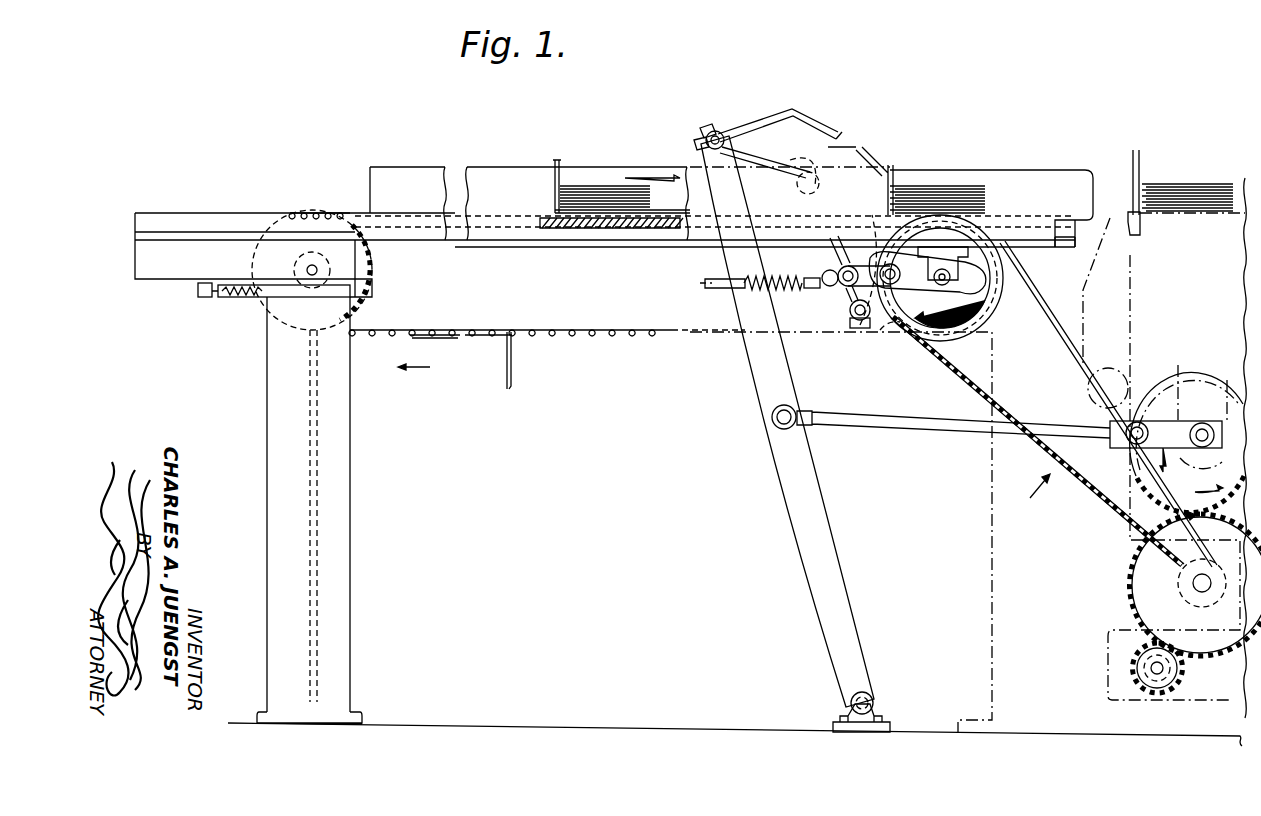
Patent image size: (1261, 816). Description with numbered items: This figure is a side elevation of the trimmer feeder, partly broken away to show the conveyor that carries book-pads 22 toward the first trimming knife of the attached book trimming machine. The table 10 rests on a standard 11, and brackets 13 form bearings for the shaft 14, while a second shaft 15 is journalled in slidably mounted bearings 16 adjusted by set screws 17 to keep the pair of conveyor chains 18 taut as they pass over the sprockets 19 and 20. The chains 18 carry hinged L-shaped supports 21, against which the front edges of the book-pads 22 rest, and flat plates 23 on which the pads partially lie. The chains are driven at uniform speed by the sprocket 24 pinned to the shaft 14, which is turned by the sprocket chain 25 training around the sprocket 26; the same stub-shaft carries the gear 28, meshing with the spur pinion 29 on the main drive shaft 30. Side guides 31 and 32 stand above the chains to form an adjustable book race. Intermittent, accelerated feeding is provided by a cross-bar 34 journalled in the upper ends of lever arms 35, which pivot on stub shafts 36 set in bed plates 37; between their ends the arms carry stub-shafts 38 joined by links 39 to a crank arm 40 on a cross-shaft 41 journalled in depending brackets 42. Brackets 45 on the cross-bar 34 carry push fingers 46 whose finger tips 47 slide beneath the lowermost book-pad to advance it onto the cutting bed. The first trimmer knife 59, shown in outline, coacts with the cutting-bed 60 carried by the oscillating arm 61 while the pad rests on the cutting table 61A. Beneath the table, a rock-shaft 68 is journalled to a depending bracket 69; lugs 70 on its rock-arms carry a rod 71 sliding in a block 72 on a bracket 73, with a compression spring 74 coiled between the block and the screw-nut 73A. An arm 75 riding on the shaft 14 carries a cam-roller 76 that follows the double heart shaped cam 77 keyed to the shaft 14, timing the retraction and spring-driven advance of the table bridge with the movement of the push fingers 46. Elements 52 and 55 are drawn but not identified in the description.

The table 10 is at (518, 240).
The standard 11 is at (350, 414).
The bracket 13 is at (955, 288).
The shaft 14 is at (938, 286).
The shaft 15 is at (305, 268).
The slidably mounted bearing 16 is at (228, 298).
The set screw 17 is at (202, 298).
The conveyor chain 18 is at (558, 328).
The sprocket 19 is at (905, 320).
The sprocket 20 is at (372, 270).
The L-shaped support 21 is at (565, 178).
The book-pad 22 is at (600, 184).
The flat plate 23 is at (660, 208).
The sprocket 24 is at (950, 336).
The sprocket chain 25 is at (966, 395).
The sprocket 26 is at (1190, 596).
The gear 28 is at (1130, 580).
The spur pinion 29 is at (1137, 668).
The main drive shaft 30 is at (1178, 674).
The side guide 31 is at (672, 165).
The side guide 32 is at (488, 172).
The cross-bar 34 is at (732, 120).
The lever arm 35 is at (755, 356).
The stub shaft 36 is at (870, 698).
The bed plate 37 is at (830, 728).
The stub-shaft 38 is at (798, 410).
The link 39 is at (905, 428).
The crank arm 40 is at (1148, 428).
The cross-shaft 41 is at (1205, 424).
The depending bracket 42 is at (1187, 443).
The bracket 45 is at (755, 125).
The push finger 46 is at (845, 130).
The finger tip 47 is at (870, 165).
The cam 52 is at (803, 161).
The housing 55 is at (1018, 218).
The first trimmer knife 59 is at (1142, 165).
The cutting-bed 60 is at (1128, 213).
The oscillating arm 61 is at (1086, 388).
The cutting table 61A is at (1220, 245).
The rock-shaft 68 is at (855, 326).
The depending bracket 69 is at (876, 228).
The lug 70 is at (830, 270).
The rod 71 is at (820, 290).
The block 72 is at (728, 290).
The bracket 73 is at (730, 260).
The screw-nut 73A is at (830, 262).
The compression spring 74 is at (790, 288).
The arm 75 is at (848, 292).
The cam-roller 76 is at (892, 284).
The double heart shaped cam 77 is at (962, 270).